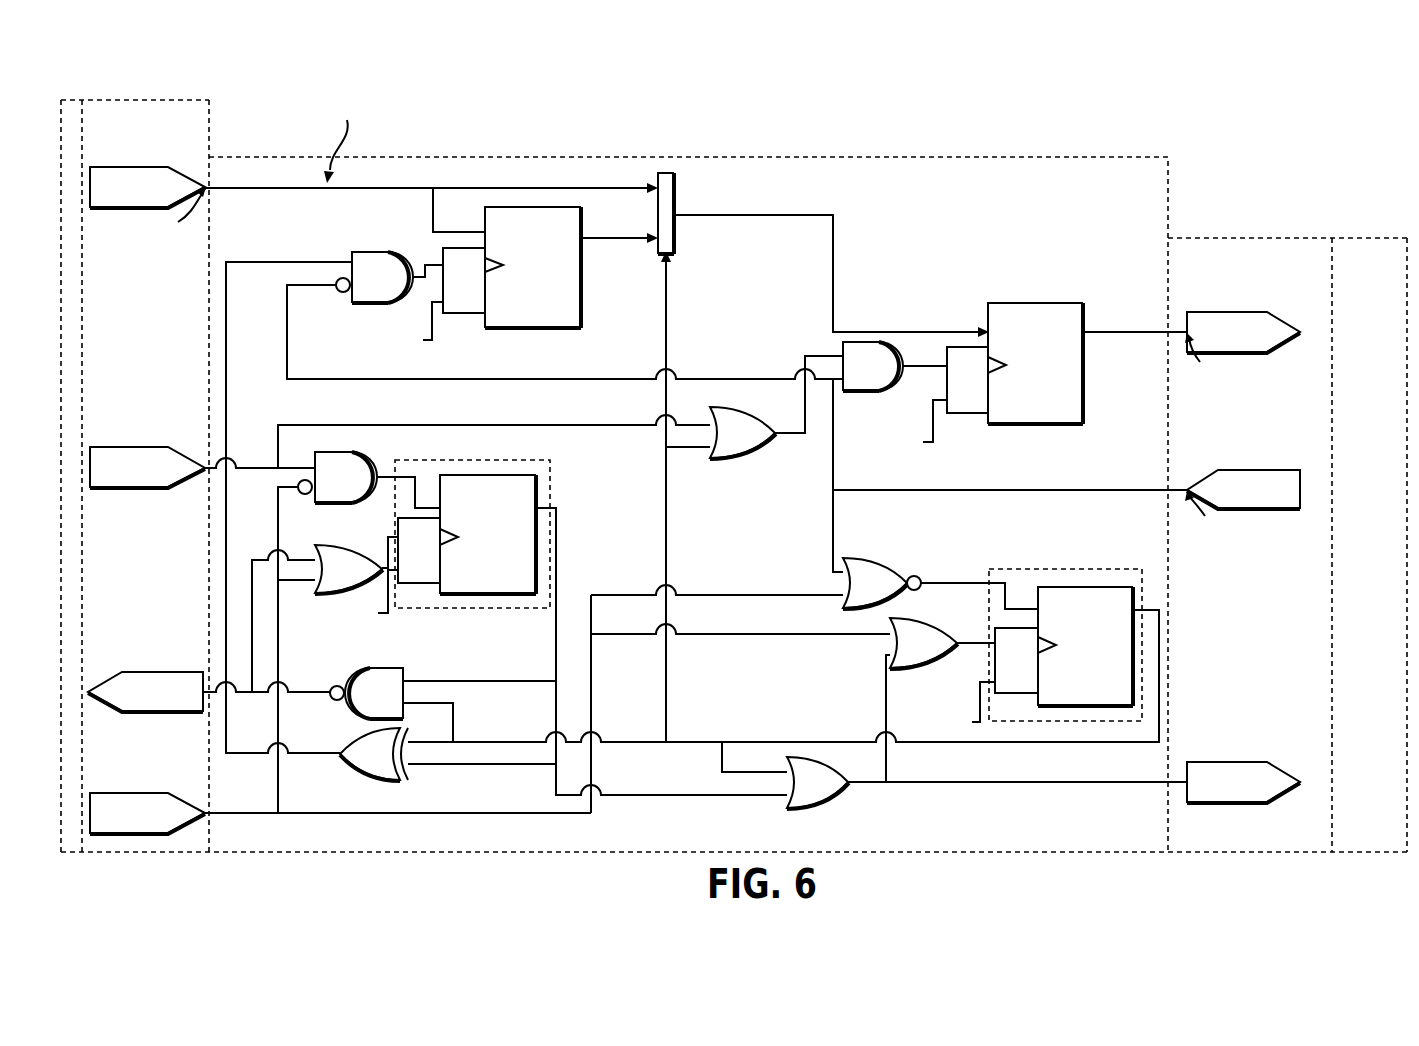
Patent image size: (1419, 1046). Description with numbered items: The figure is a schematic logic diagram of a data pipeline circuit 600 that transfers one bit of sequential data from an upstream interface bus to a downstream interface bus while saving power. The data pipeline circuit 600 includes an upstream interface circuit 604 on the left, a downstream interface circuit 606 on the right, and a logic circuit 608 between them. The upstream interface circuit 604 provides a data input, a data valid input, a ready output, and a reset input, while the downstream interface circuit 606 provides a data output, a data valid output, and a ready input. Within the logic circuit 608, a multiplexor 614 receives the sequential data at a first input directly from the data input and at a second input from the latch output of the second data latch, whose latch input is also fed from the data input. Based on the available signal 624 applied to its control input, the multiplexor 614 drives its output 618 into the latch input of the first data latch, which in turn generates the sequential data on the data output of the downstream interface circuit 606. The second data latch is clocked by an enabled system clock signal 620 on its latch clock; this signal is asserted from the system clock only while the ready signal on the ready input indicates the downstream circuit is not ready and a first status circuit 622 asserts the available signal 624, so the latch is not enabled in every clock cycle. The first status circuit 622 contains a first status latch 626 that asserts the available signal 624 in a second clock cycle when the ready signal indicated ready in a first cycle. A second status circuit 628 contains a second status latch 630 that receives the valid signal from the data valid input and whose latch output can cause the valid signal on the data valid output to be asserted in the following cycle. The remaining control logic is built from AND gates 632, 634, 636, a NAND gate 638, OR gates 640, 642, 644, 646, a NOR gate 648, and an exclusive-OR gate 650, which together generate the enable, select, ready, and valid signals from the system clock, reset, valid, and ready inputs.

The data pipeline circuit 600 is at (1090, 82).
The upstream interface circuit 604 is at (232, 90).
The downstream interface circuit 606 is at (1262, 238).
The logic circuit 608 is at (1052, 852).
The multiplexor 614 is at (676, 175).
The output 618 is at (745, 205).
The enabled system clock signal 620 is at (425, 262).
The first status circuit 622 is at (1068, 569).
The available signal 624 is at (1160, 630).
The first status latch 626 is at (1093, 706).
The second status circuit 628 is at (575, 456).
The second status latch 630 is at (538, 578).
The AND gate 632 is at (372, 453).
The AND gate 634 is at (360, 252).
The AND gate 636 is at (878, 392).
The NAND gate 638 is at (430, 655).
The OR gate 640 is at (340, 594).
The OR gate 642 is at (730, 458).
The OR gate 644 is at (925, 668).
The OR gate 646 is at (840, 798).
The NOR gate 648 is at (875, 560).
The exclusive-OR (XOR) gate 650 is at (360, 770).